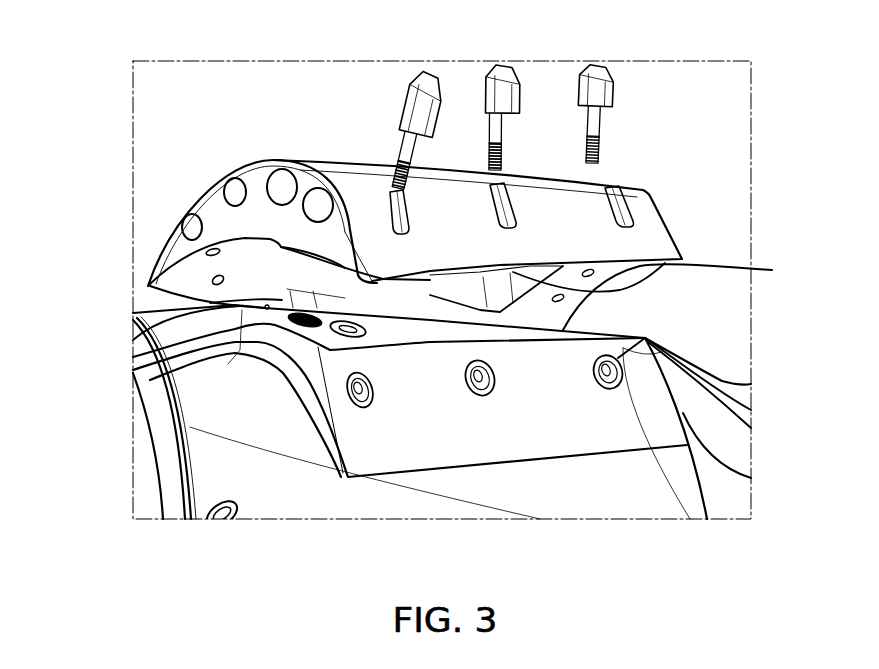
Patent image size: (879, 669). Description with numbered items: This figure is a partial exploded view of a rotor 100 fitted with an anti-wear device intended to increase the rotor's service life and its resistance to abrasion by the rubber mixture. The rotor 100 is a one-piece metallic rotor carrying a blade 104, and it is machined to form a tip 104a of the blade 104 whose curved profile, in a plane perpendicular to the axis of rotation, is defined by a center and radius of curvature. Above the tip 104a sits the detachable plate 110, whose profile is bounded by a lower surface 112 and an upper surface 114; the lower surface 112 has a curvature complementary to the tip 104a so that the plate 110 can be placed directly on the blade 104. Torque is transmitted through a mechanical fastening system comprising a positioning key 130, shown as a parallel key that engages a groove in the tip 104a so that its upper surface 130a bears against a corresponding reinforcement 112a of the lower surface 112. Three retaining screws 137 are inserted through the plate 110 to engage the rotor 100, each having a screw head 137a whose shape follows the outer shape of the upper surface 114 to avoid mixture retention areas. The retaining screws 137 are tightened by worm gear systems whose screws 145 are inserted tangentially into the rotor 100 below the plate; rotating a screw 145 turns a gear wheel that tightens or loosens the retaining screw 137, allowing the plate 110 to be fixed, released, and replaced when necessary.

The rotor 100 is at (690, 108).
The blade 104 is at (645, 338).
The tip of the blade 104a is at (167, 357).
The plate 110 is at (218, 173).
The lower surface 112 is at (148, 286).
The reinforcement 112a is at (750, 269).
The upper surface 114 is at (333, 158).
The positioning key 130 is at (207, 308).
The upper surface of the key 130a is at (333, 215).
The retaining screw 137 is at (397, 158).
The screw head 137a is at (428, 74).
The screw 145 is at (373, 410).